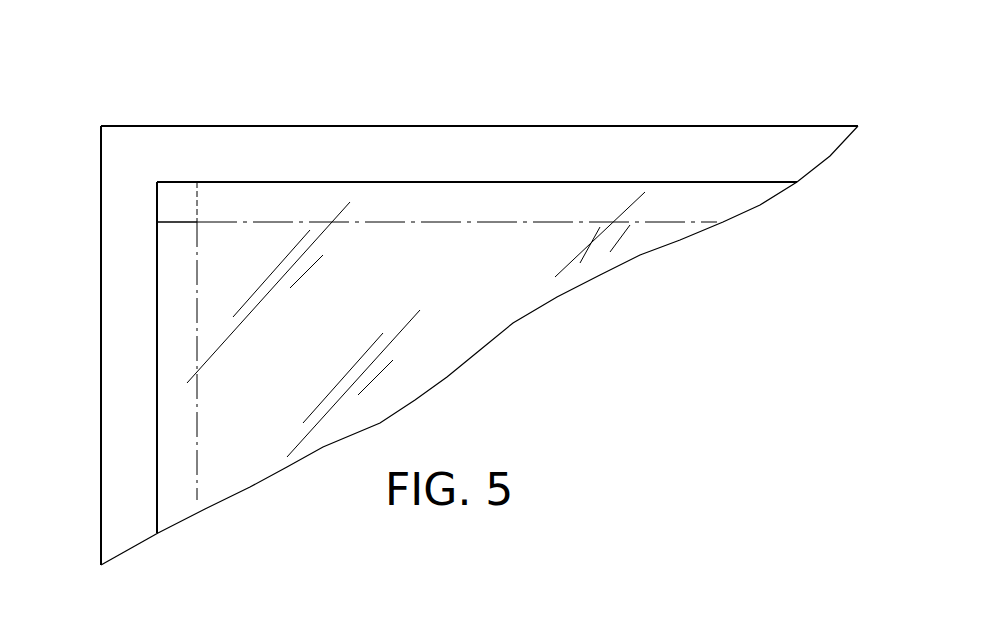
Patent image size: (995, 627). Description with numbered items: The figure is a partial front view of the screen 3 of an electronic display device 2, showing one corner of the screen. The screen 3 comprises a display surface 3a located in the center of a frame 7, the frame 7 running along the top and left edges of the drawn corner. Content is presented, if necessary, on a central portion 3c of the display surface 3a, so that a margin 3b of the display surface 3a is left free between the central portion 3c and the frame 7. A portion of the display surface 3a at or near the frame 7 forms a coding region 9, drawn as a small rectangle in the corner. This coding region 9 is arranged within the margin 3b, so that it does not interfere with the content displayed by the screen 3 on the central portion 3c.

The electronic display device 2 is at (762, 101).
The screen 3 is at (523, 145).
The display surface 3a is at (147, 427).
The margin 3b is at (170, 323).
The central portion 3c is at (240, 465).
The frame 7 is at (118, 255).
The coding region 9 is at (177, 202).